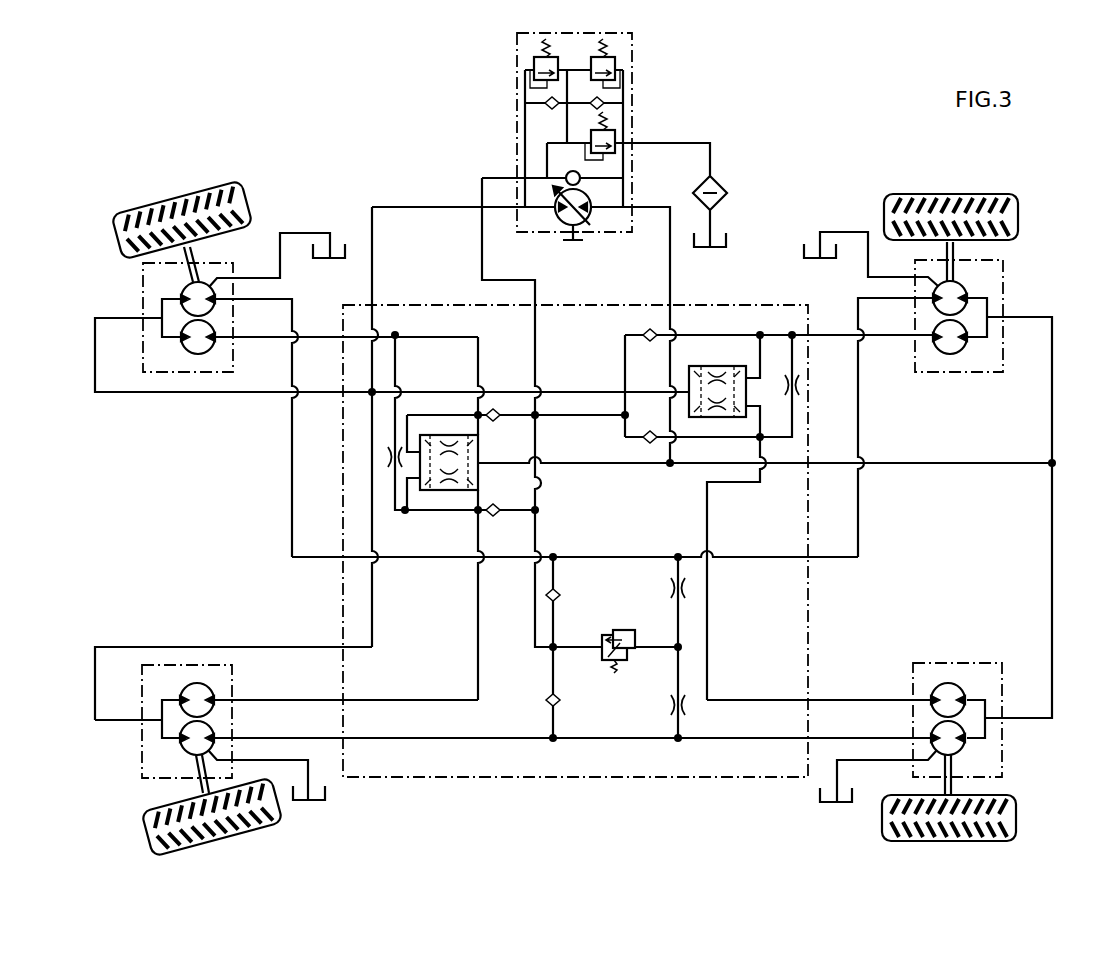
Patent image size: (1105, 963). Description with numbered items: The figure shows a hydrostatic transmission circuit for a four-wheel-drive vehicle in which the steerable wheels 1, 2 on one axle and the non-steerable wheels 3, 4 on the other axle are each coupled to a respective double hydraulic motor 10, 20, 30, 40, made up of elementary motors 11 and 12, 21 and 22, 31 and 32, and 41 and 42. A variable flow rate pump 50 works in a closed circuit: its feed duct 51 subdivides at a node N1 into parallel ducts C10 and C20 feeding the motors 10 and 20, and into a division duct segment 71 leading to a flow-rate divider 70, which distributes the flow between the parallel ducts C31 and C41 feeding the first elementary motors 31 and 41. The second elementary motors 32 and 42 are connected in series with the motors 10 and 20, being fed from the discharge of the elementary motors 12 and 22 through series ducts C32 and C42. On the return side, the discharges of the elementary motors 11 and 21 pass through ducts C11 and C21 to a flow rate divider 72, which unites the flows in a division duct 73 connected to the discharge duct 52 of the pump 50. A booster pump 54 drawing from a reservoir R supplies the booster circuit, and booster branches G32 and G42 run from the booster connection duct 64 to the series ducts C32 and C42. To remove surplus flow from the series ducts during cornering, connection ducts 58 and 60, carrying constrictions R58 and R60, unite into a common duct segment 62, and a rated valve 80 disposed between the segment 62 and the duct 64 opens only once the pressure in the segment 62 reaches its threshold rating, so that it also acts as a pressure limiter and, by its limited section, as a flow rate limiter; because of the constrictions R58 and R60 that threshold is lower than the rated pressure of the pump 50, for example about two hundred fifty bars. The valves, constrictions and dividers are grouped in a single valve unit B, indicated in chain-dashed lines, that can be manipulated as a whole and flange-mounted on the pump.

The wheel 1 is at (170, 199).
The wheel 2 is at (236, 836).
The wheel 3 is at (947, 193).
The wheel 4 is at (1018, 818).
The hydraulic motor 10 is at (143, 300).
The first elementary motor 11 is at (197, 346).
The second elementary motor 12 is at (205, 290).
The hydraulic motor 20 is at (141, 742).
The first elementary motor 21 is at (197, 688).
The second elementary motor 22 is at (192, 752).
The hydraulic motor 30 is at (1003, 277).
The first elementary motor 31 is at (950, 350).
The second elementary motor 32 is at (945, 303).
The hydraulic motor 40 is at (920, 663).
The first elementary motor 41 is at (948, 688).
The second elementary motor 42 is at (955, 747).
The variable flow rate pump 50 is at (584, 230).
The feed duct 51 is at (408, 207).
The discharge duct 52 is at (672, 276).
The booster pump 54 is at (582, 177).
The connection duct 58 is at (678, 613).
The connection duct 60 is at (680, 684).
The common duct segment 62 is at (656, 648).
The booster connection duct 64 is at (535, 331).
The flow-rate divider 70 is at (718, 366).
The division duct segment 71 is at (577, 392).
The flow rate divider 72 is at (478, 471).
The division duct 73 is at (565, 464).
The rated valve 80 is at (608, 636).
The valve unit B is at (500, 778).
The reservoir R is at (727, 241).
The node N1 is at (369, 396).
The parallel duct C10 is at (262, 396).
The duct C11 is at (332, 336).
The parallel duct C20 is at (304, 647).
The duct C21 is at (316, 700).
The parallel duct C31 is at (822, 335).
The series duct C32 is at (628, 557).
The parallel duct C41 is at (850, 700).
The series duct C42 is at (474, 739).
The booster branch G32 is at (556, 578).
The booster branch G42 is at (554, 674).
The constriction R58 is at (688, 590).
The constriction R60 is at (686, 706).